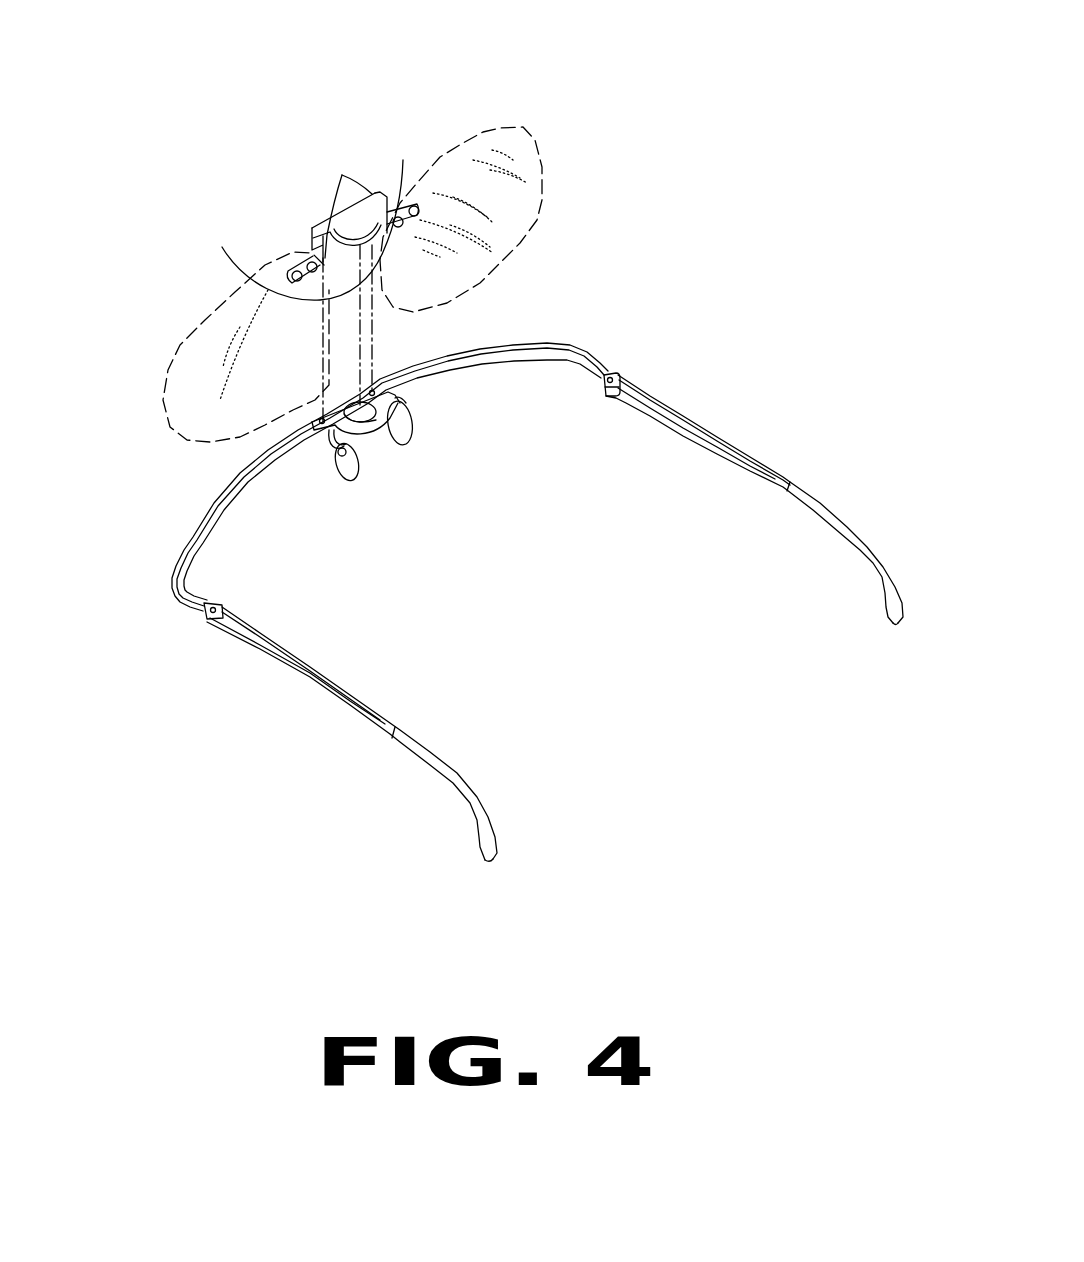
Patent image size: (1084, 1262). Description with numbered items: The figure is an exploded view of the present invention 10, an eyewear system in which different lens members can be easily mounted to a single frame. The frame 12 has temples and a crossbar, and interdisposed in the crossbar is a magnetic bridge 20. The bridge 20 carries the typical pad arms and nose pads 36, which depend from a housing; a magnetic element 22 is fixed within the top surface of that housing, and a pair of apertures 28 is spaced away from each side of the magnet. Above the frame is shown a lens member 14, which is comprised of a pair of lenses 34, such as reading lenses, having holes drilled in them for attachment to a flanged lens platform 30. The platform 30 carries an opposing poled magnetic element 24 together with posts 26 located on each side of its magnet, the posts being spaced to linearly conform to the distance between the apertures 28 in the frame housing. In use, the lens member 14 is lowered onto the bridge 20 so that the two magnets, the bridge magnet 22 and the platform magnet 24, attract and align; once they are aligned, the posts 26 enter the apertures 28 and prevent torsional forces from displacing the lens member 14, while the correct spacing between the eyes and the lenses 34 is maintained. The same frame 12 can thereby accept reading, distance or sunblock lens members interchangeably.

The present invention 10 is at (698, 220).
The frame 12 is at (180, 562).
The lens member 14 is at (560, 157).
The magnetic bridge 20 is at (388, 392).
The magnetic element 22 is at (357, 413).
The opposing poled magnetic element 24 is at (283, 301).
The posts 26 is at (353, 266).
The apertures 28 is at (310, 430).
The flanged lens platform 30 is at (403, 160).
The lenses 34 is at (480, 263).
The nose pads 36 is at (403, 447).